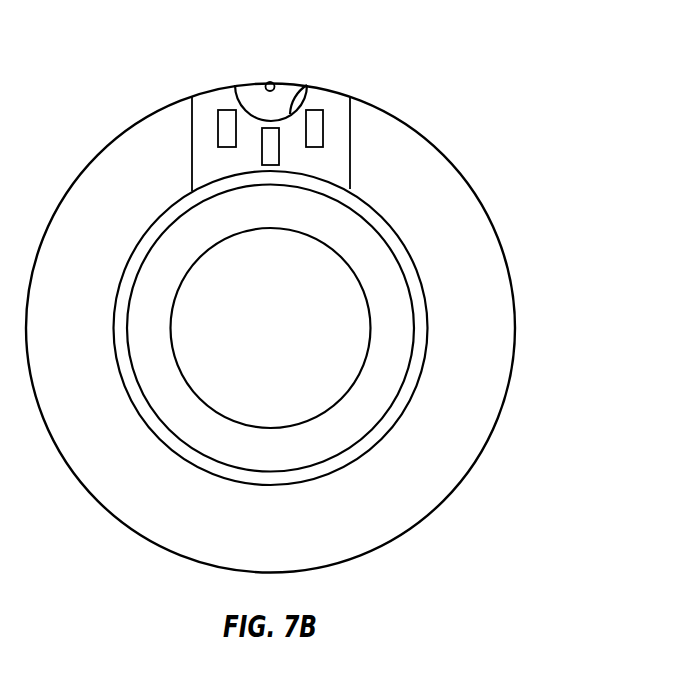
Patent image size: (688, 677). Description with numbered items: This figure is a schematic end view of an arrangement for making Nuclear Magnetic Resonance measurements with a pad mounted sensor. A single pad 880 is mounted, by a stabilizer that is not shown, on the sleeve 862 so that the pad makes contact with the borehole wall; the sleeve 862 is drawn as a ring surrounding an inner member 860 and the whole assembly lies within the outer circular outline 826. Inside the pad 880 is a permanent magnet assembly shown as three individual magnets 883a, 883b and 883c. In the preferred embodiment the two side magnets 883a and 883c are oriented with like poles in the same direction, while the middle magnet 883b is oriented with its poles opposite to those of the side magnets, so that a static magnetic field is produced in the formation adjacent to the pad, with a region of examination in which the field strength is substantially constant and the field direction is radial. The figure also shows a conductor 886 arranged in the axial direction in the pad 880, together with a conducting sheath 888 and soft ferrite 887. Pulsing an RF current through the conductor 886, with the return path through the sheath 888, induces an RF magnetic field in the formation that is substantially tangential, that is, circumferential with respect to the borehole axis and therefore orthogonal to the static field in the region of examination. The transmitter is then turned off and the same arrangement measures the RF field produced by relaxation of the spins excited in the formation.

The housing 826 is at (302, 328).
The inner sleeve 860 is at (292, 328).
The sleeve 862 is at (296, 328).
The pad 880 is at (324, 141).
The magnet 883a is at (383, 102).
The magnet 883b is at (196, 163).
The magnet 883c is at (168, 113).
The conductor 886 is at (267, 87).
The soft ferrite 887 is at (340, 77).
The conducting sheath 888 is at (248, 97).